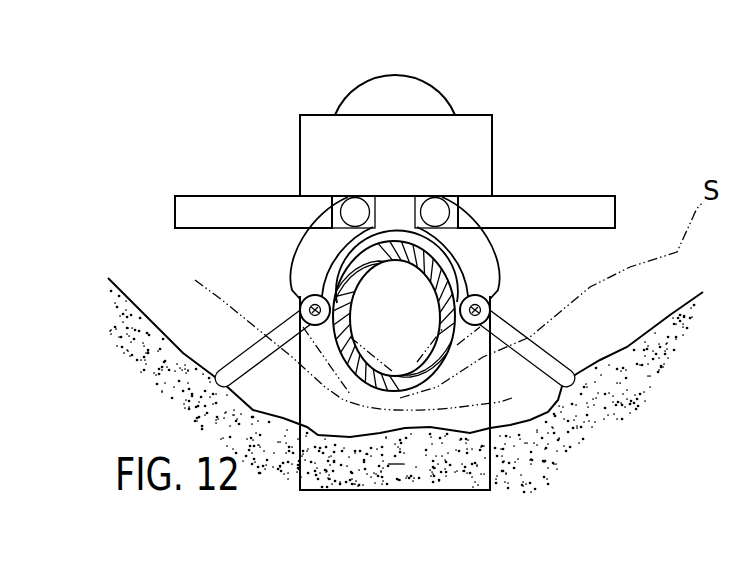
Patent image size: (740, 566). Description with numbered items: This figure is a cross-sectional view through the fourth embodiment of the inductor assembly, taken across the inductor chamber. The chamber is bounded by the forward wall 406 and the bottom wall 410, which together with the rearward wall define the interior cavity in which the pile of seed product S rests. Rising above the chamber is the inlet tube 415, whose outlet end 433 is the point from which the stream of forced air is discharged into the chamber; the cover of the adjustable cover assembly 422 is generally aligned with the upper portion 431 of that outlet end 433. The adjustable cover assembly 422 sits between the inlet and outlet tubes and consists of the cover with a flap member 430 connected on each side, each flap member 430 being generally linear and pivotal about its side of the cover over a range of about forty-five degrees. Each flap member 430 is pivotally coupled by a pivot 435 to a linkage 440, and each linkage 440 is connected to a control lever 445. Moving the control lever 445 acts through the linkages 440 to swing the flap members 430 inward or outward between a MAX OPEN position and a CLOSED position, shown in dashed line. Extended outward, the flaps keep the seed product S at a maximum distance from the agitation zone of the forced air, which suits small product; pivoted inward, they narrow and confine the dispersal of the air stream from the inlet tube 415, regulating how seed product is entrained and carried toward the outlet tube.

The forward wall 406 is at (470, 448).
The bottom wall 410 is at (473, 492).
The inlet tube 415 is at (395, 75).
The adjustable cover assembly 422 is at (515, 170).
The flap member 430 is at (246, 352).
The upper portion 431 is at (397, 231).
The outlet end 433 is at (470, 243).
The pivot 435 is at (301, 303).
The linkage 440 is at (289, 268).
The control lever 445 is at (243, 195).